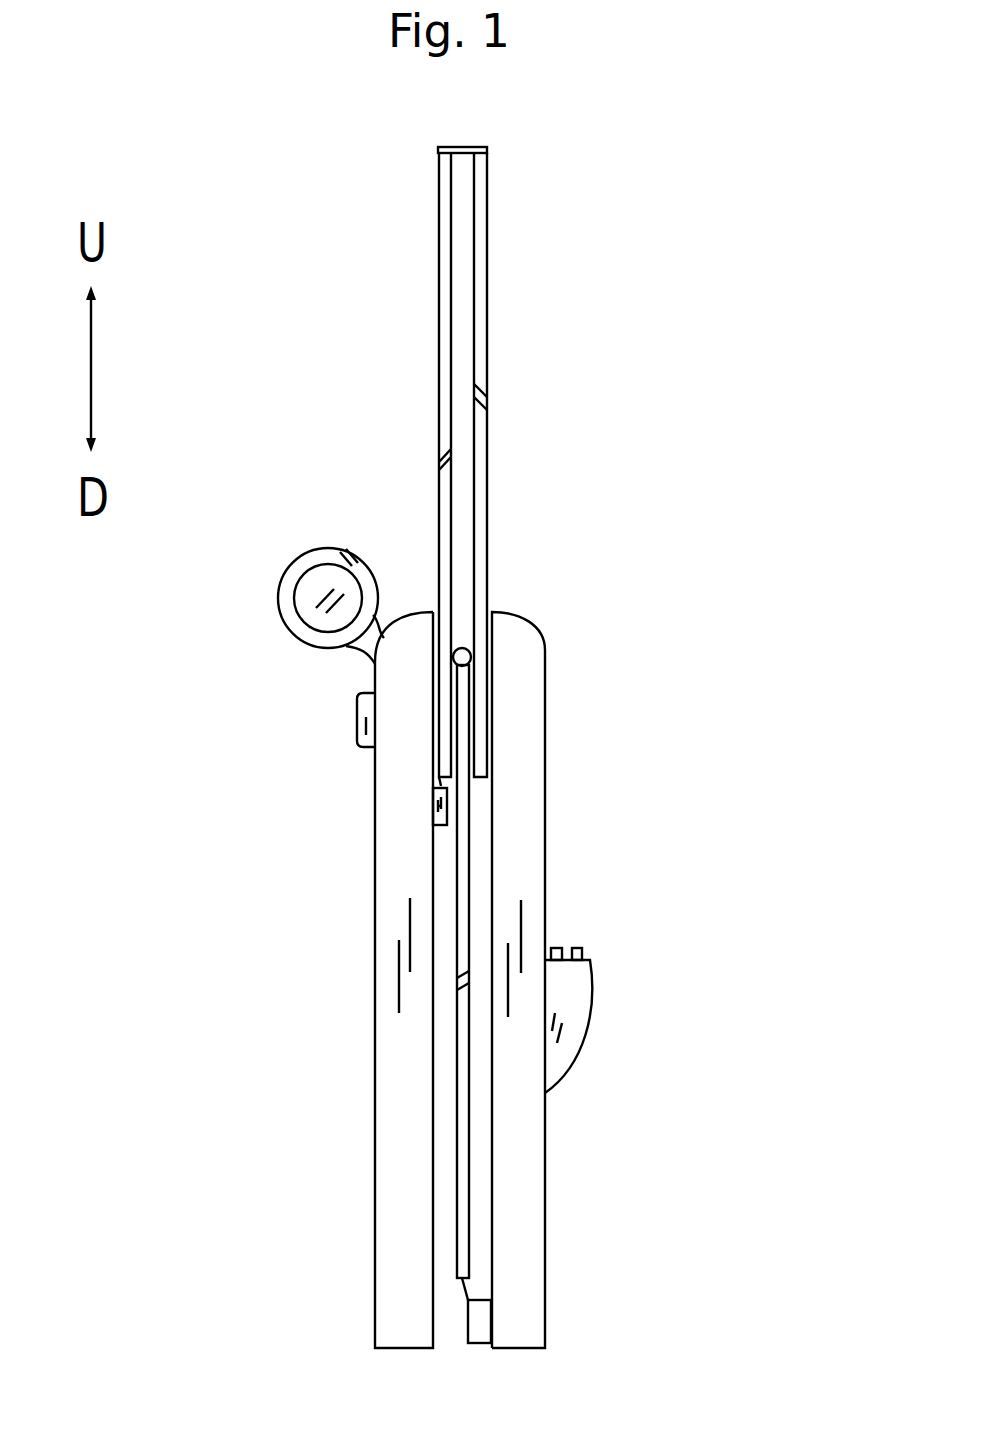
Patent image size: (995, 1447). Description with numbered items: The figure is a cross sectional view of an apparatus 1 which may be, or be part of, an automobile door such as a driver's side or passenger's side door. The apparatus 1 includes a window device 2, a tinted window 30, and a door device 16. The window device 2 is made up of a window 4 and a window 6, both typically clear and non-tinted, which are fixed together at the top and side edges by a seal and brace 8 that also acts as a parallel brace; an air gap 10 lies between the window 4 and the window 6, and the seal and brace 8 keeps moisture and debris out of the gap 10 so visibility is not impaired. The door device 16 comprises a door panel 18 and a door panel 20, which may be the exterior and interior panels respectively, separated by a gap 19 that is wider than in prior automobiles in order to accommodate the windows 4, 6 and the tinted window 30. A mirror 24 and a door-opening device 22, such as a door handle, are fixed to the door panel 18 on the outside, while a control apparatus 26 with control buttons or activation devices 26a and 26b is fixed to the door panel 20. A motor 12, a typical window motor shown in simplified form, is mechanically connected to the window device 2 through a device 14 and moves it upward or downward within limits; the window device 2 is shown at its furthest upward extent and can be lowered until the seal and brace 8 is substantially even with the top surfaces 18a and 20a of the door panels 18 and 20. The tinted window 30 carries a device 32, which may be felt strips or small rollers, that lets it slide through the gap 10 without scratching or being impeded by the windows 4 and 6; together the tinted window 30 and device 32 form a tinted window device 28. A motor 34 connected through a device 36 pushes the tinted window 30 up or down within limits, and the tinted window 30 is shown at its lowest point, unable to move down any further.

The apparatus 1 is at (708, 262).
The window device 2 is at (422, 252).
The window 4 is at (452, 396).
The window 6 is at (486, 323).
The seal and brace 8 is at (463, 147).
The air gap 10 is at (465, 477).
The motor 12 is at (435, 807).
The device 14 is at (438, 784).
The door device 16 is at (364, 1052).
The door panel 18 is at (410, 922).
The top surface 18a is at (410, 612).
The gap 19 is at (480, 1125).
The door panel 20 is at (538, 895).
The top surface 20a is at (497, 617).
The door-opening device 22 is at (367, 715).
The mirror 24 is at (318, 600).
The control apparatus 26 is at (578, 993).
The control button or activation device 26a is at (572, 950).
The control button or activation device 26b is at (582, 952).
The tinted window device 28 is at (497, 783).
The tinted window 30 is at (458, 858).
The device 32 is at (466, 651).
The motor 34 is at (480, 1320).
The device 36 is at (462, 1283).